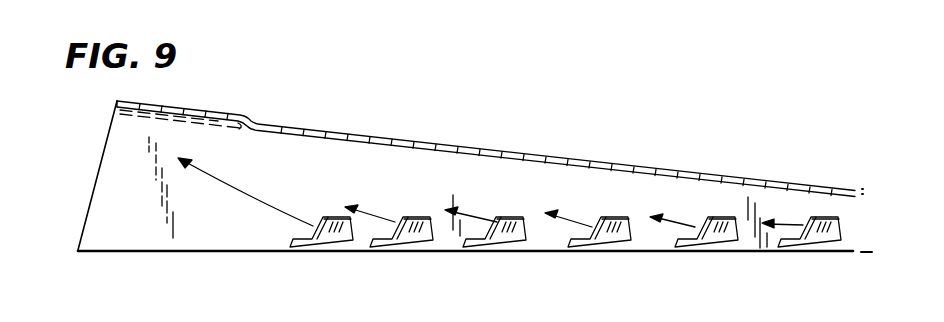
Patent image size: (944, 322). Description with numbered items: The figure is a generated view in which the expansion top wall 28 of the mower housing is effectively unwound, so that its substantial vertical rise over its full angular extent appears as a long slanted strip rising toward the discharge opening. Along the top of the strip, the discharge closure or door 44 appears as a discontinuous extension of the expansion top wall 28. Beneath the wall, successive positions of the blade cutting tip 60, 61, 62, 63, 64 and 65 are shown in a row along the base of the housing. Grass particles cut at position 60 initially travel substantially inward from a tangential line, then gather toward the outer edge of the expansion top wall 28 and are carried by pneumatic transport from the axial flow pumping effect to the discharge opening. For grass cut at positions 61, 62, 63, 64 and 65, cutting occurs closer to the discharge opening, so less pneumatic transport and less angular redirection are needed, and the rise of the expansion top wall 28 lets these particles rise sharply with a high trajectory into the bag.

The expansion top wall 28 is at (441, 146).
The discharge closure or door 44 is at (212, 120).
The cutting tip position 60 is at (831, 232).
The cutting tip position 61 is at (724, 232).
The cutting tip position 62 is at (617, 232).
The cutting tip position 63 is at (513, 232).
The cutting tip position 64 is at (420, 232).
The cutting tip position 65 is at (338, 232).